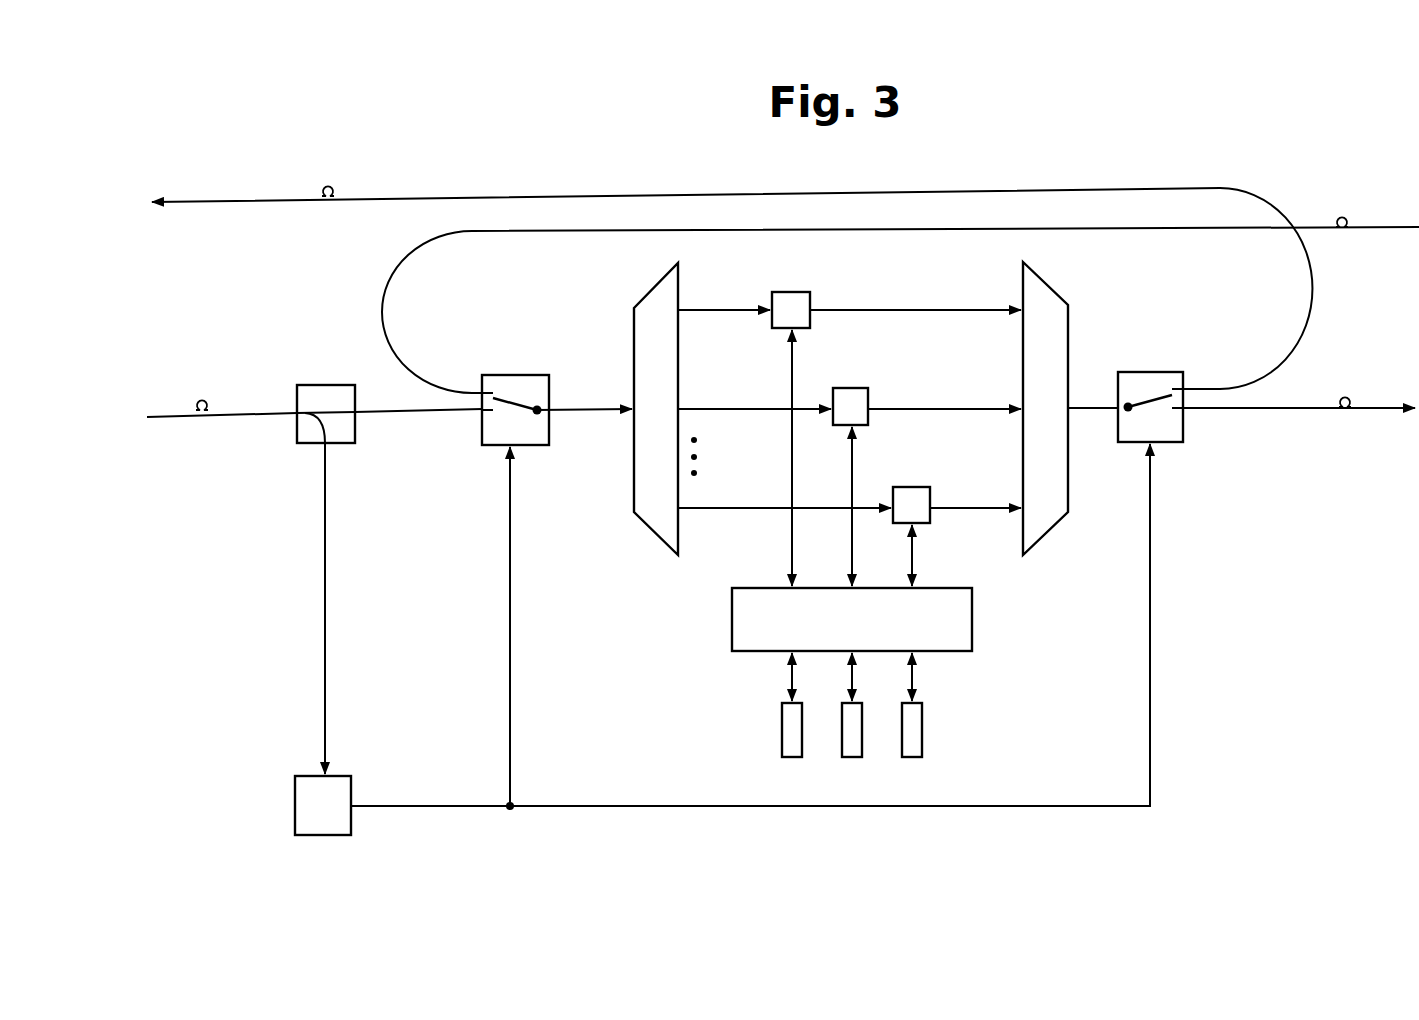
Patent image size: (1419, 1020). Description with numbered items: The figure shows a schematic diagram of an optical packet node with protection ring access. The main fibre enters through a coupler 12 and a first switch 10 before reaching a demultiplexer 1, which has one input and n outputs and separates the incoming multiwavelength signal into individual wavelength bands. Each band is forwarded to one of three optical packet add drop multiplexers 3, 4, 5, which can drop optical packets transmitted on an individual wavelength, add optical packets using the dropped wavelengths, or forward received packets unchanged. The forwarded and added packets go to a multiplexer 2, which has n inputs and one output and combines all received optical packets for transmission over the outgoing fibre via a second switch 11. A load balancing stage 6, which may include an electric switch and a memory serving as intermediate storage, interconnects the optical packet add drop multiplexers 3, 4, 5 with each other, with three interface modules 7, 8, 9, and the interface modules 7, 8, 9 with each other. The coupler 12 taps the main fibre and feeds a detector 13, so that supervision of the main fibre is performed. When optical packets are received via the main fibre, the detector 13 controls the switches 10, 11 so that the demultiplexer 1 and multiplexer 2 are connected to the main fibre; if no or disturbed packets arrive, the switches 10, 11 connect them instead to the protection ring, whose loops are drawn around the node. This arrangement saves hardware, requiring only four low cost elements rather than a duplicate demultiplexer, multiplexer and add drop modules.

The demultiplexer 1 is at (660, 306).
The multiplexer 2 is at (1048, 312).
The optical packet add drop multiplexer 3 is at (795, 300).
The optical packet add drop multiplexer 4 is at (858, 397).
The optical packet add drop multiplexer 5 is at (918, 500).
The load balancing stage 6 is at (957, 620).
The interface module 7 is at (790, 742).
The interface module 8 is at (850, 740).
The interface module 9 is at (910, 742).
The switch 10 is at (523, 390).
The switch 11 is at (1148, 380).
The coupler 12 is at (325, 395).
The detector 13 is at (327, 818).